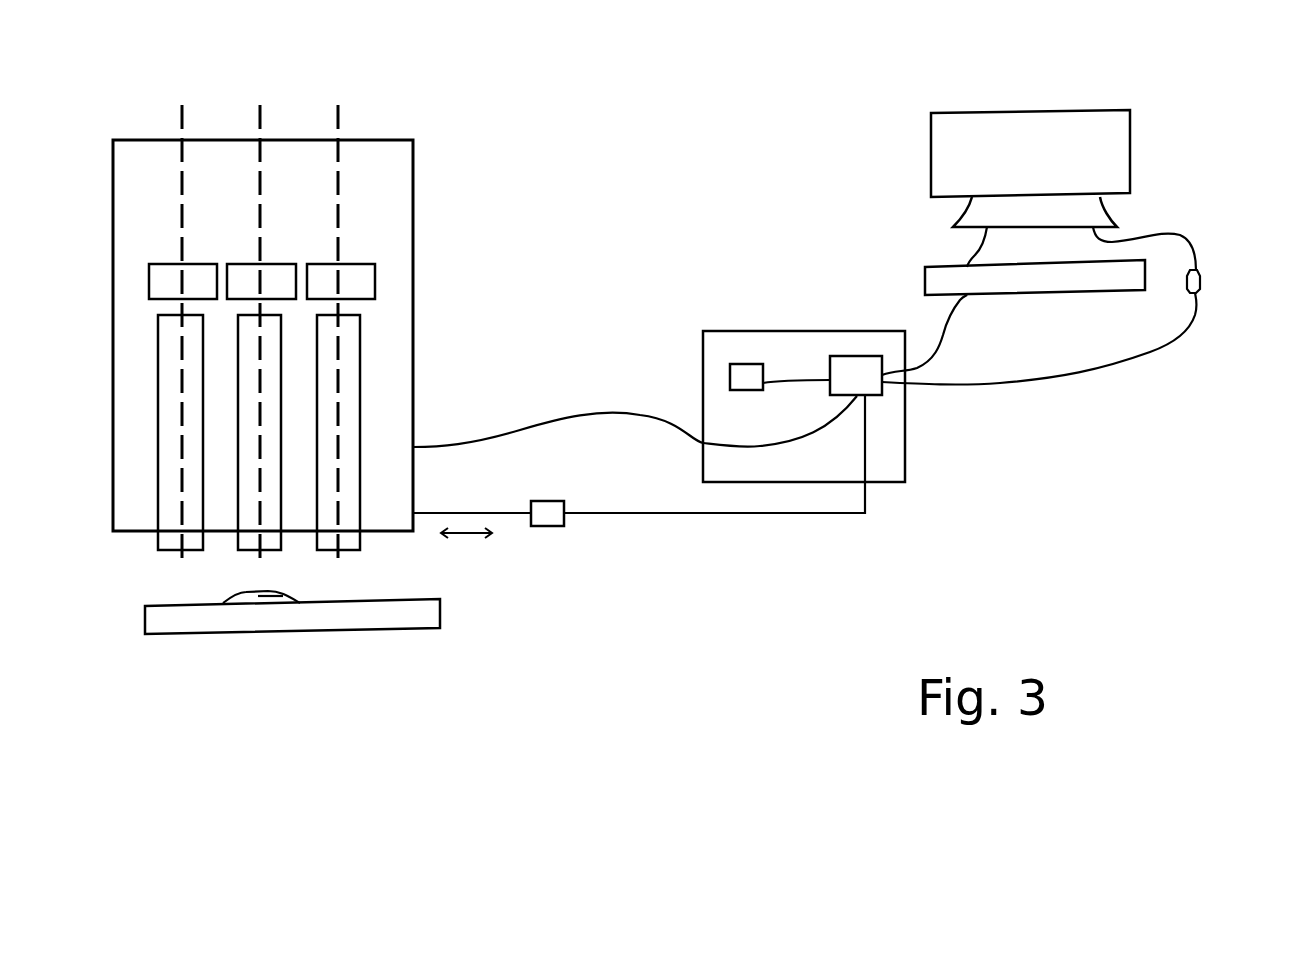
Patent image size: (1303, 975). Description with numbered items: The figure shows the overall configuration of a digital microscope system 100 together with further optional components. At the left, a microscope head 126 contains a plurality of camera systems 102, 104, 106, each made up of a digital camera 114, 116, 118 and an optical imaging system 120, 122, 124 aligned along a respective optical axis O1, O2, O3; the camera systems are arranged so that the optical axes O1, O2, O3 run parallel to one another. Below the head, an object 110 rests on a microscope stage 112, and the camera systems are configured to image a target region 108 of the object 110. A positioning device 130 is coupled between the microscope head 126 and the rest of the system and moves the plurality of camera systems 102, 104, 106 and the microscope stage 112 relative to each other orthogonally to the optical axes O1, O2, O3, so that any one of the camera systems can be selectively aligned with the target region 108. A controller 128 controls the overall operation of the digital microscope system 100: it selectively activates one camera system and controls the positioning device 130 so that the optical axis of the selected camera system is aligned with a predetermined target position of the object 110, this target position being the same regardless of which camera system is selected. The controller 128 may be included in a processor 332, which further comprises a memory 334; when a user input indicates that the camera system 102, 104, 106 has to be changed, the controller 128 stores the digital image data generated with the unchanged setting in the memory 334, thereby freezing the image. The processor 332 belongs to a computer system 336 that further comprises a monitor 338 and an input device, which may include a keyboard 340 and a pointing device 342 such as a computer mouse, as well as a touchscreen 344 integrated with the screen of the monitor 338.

The digital microscope system 100 is at (692, 95).
The camera system 102 is at (172, 456).
The camera system 104 is at (248, 402).
The camera system 106 is at (328, 345).
The target region 108 is at (260, 596).
The object 110 is at (297, 599).
The microscope stage 112 is at (200, 635).
The digital camera 114 is at (166, 278).
The digital camera 116 is at (244, 278).
The digital camera 118 is at (322, 278).
The optical imaging system 120 is at (170, 540).
The optical imaging system 122 is at (272, 483).
The optical imaging system 124 is at (352, 511).
The microscope head 126 is at (413, 291).
The controller 128 is at (851, 356).
The positioning device 130 is at (550, 527).
The processor 332 is at (897, 482).
The memory 334 is at (752, 364).
The computer system 336 is at (1042, 437).
The monitor 338 is at (1093, 110).
The keyboard 340 is at (1086, 295).
The pointing device 342 is at (1201, 282).
The touchscreen 344 is at (932, 168).
The optical axis O1 is at (186, 120).
The optical axis O2 is at (264, 120).
The optical axis O3 is at (342, 120).